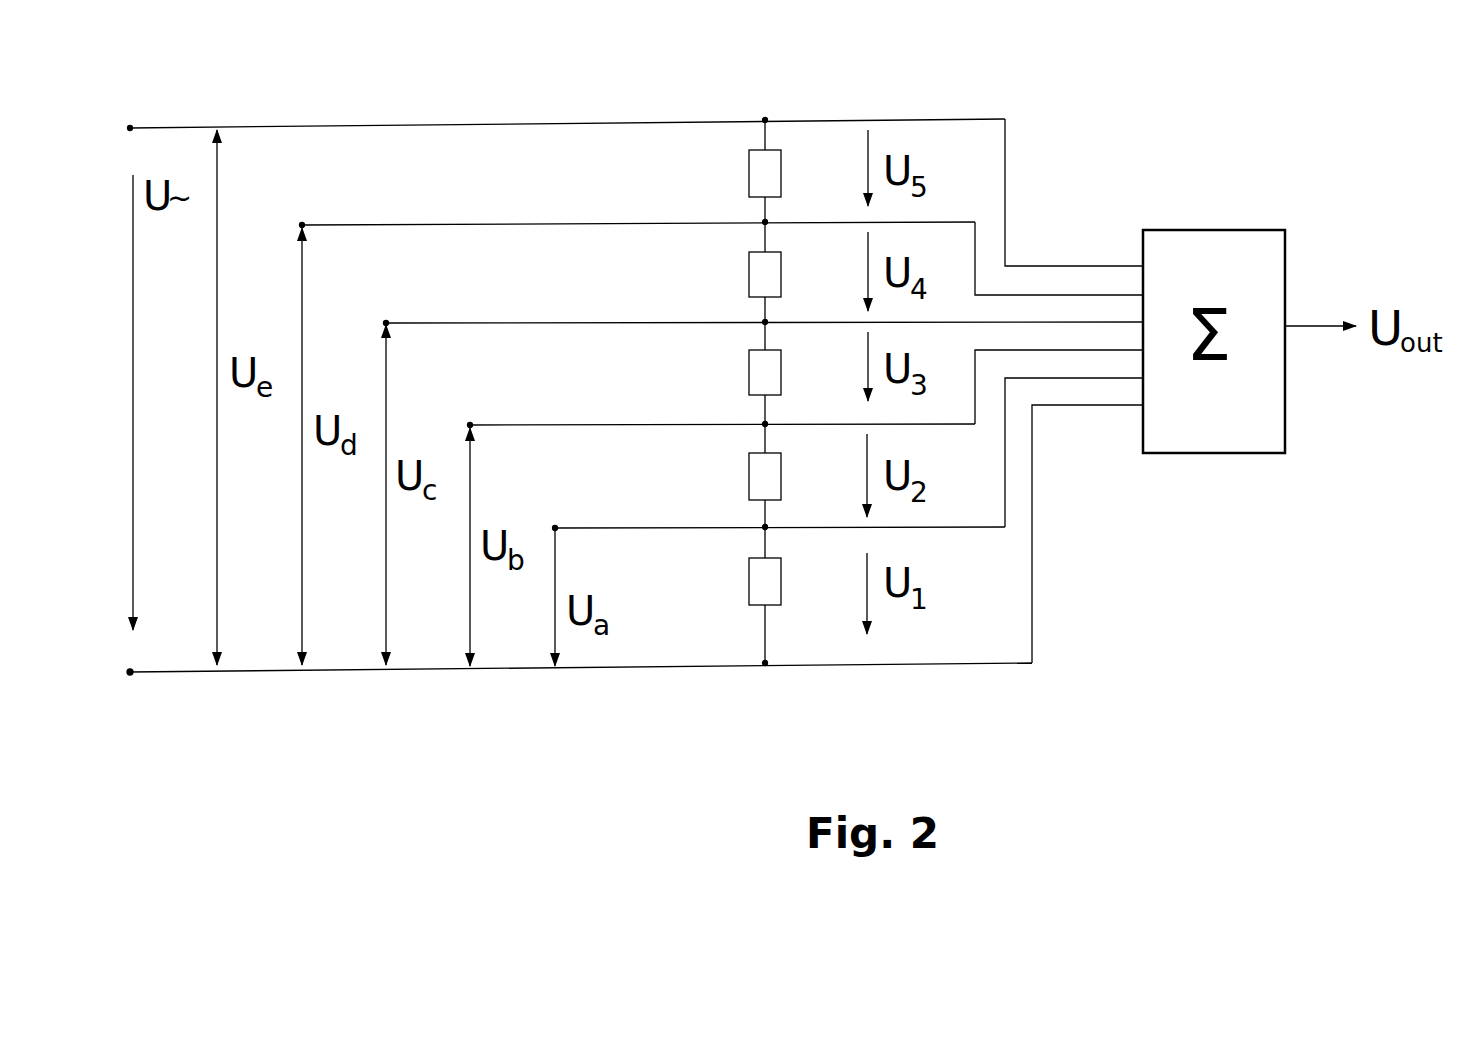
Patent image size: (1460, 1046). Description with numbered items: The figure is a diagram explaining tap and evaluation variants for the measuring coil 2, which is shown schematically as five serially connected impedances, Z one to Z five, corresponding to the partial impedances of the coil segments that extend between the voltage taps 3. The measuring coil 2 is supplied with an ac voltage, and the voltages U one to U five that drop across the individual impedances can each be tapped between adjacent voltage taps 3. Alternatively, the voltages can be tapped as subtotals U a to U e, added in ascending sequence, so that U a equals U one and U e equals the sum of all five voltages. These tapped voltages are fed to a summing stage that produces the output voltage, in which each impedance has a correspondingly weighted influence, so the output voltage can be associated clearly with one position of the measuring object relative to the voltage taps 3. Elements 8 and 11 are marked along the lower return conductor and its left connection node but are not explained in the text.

The measuring coil 2 is at (742, 626).
The voltage taps 3 is at (671, 367).
The return line 8 is at (332, 683).
The input terminal 11 is at (130, 672).